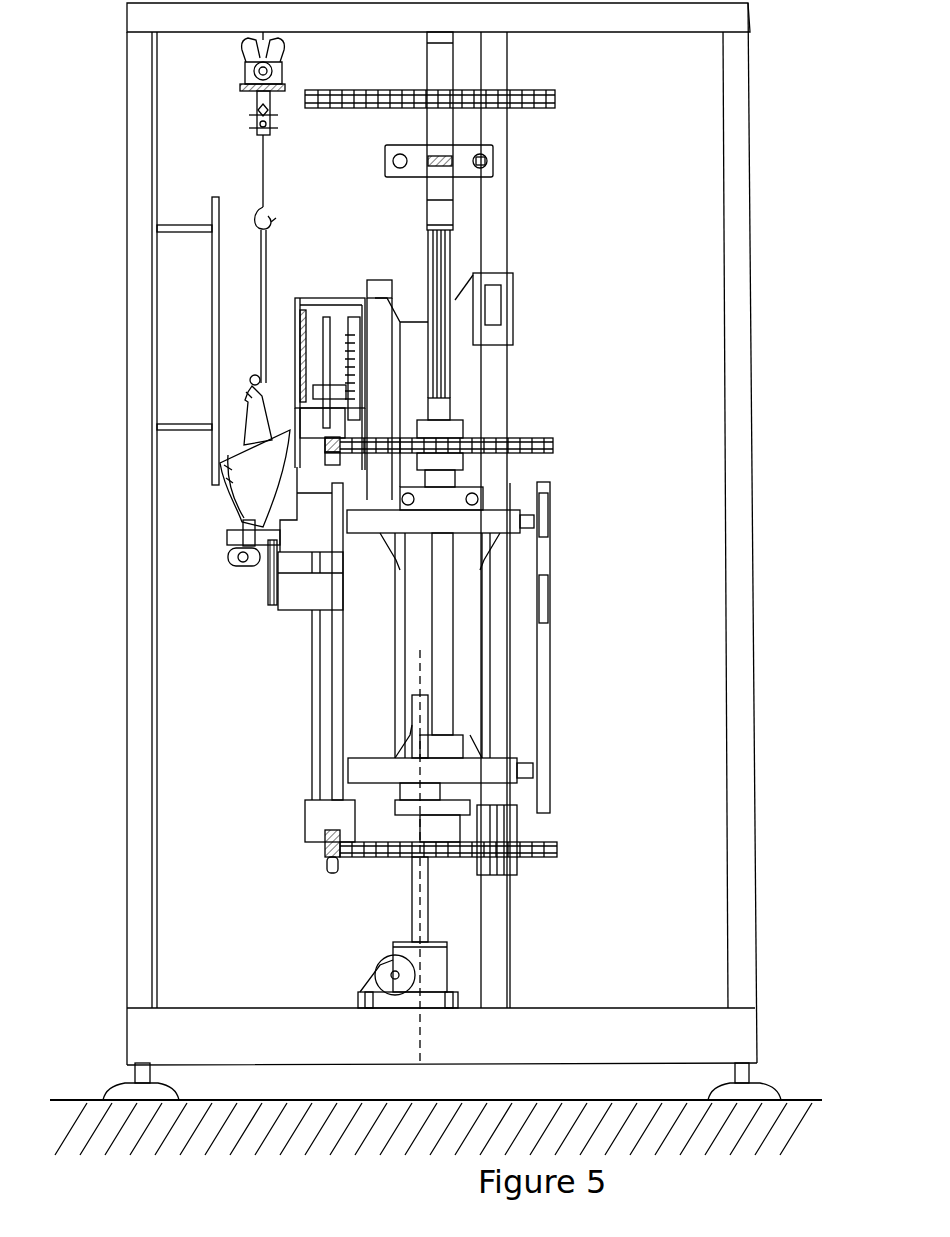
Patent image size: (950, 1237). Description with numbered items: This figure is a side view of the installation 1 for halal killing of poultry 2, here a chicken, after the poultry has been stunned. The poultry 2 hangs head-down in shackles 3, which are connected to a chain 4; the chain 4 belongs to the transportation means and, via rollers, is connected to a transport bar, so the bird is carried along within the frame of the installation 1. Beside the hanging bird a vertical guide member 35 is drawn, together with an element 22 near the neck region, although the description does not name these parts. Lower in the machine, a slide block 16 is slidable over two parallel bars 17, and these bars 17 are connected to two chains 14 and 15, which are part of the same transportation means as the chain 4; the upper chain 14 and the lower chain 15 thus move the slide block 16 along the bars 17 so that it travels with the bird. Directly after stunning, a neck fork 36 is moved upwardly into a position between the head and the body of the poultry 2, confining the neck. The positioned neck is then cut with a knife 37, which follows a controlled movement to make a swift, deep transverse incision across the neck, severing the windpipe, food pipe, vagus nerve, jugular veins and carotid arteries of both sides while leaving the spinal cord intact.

The installation 1 is at (104, 234).
The poultry 2 is at (258, 410).
The shackles 3 is at (260, 312).
The chain 4 is at (240, 105).
The chain 14 is at (547, 432).
The chain 15 is at (312, 850).
The slide block 16 is at (283, 614).
The parallel bars 17 is at (307, 704).
The ring 22 is at (226, 555).
The guide bar 35 is at (210, 285).
The neck fork 36 is at (226, 538).
The knife 37 is at (216, 525).